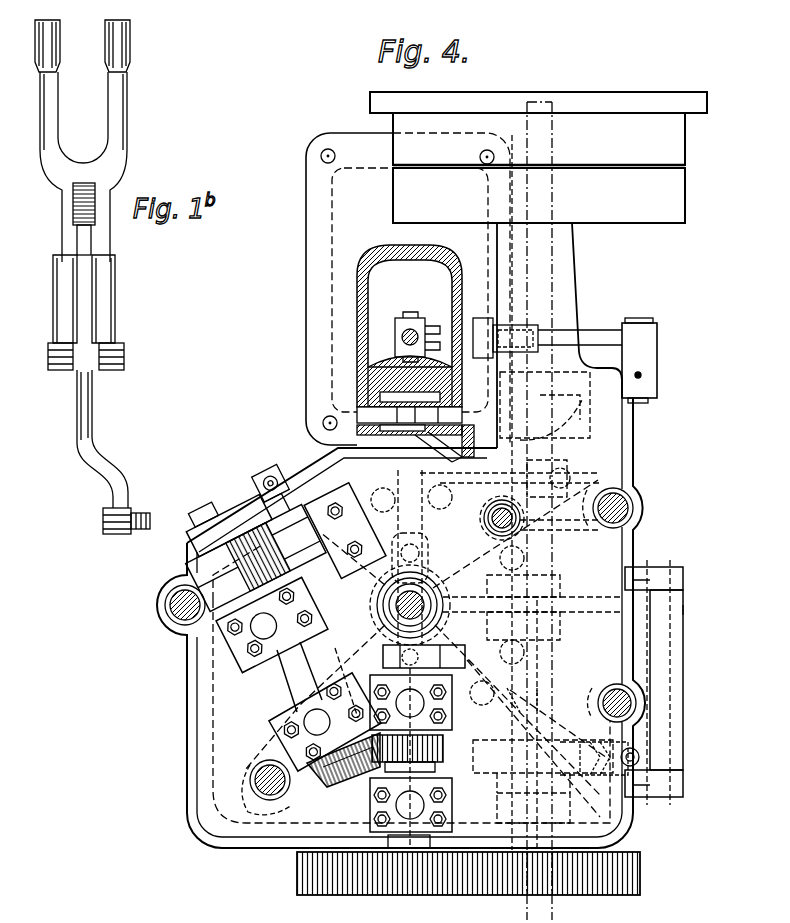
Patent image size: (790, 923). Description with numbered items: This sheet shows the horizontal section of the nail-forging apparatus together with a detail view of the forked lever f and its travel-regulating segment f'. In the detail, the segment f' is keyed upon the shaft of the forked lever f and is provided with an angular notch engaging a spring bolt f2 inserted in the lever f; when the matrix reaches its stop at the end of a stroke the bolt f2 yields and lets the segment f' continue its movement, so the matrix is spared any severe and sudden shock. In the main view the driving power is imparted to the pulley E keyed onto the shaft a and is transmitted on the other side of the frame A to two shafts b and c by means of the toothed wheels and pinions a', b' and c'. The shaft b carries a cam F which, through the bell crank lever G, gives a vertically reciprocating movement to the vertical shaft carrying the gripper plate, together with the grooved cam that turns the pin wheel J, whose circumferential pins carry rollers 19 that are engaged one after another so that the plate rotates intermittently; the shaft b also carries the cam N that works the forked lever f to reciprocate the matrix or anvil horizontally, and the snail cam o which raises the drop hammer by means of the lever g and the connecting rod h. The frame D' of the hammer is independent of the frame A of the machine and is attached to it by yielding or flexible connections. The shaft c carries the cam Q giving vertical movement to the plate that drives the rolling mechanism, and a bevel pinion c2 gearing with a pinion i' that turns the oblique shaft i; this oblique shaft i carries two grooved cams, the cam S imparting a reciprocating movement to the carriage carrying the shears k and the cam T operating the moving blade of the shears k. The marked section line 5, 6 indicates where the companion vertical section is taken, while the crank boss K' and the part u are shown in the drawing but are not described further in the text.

In FIG. 1B, the forked lever f is at (75, 141).
In FIG. 1B, the spring bolt f2 is at (82, 237).
In FIG. 1B, the segment f' is at (103, 452).
In FIG. 4, the section line 5 is at (152, 603).
In FIG. 4, the section line 6 is at (683, 610).
In FIG. 4, the rollers 19 is at (478, 514).
In FIG. 4, the frame A is at (401, 622).
In FIG. 4, the pulley E is at (539, 402).
In FIG. 4, the hammer frame D' is at (415, 353).
In FIG. 4, the connecting rod h is at (409, 337).
In FIG. 4, the cam N is at (545, 407).
In FIG. 4, the snail cam o is at (583, 340).
In FIG. 4, the lever g is at (620, 336).
In FIG. 4, the cam T is at (238, 510).
In FIG. 4, the cam S is at (295, 577).
In FIG. 4, the pin wheel J is at (419, 557).
In FIG. 4, the crank pin boss K' is at (497, 527).
In FIG. 4, the shears k is at (510, 495).
In FIG. 4, the shaft a is at (496, 600).
In FIG. 4, the cam Q is at (424, 656).
In FIG. 4, the oblique shaft i is at (313, 680).
In FIG. 4, the pinion i' is at (325, 742).
In FIG. 4, the bevel pinion c2 is at (444, 750).
In FIG. 4, the cam F is at (543, 781).
In FIG. 4, the bell crank lever G is at (654, 682).
In FIG. 4, the shaft b is at (513, 700).
In FIG. 4, the rod u is at (541, 700).
In FIG. 4, the shaft c is at (411, 759).
In FIG. 4, the toothed wheel c' is at (468, 884).
In FIG. 4, the toothed wheel a' is at (515, 885).
In FIG. 4, the toothed wheel b' is at (582, 885).